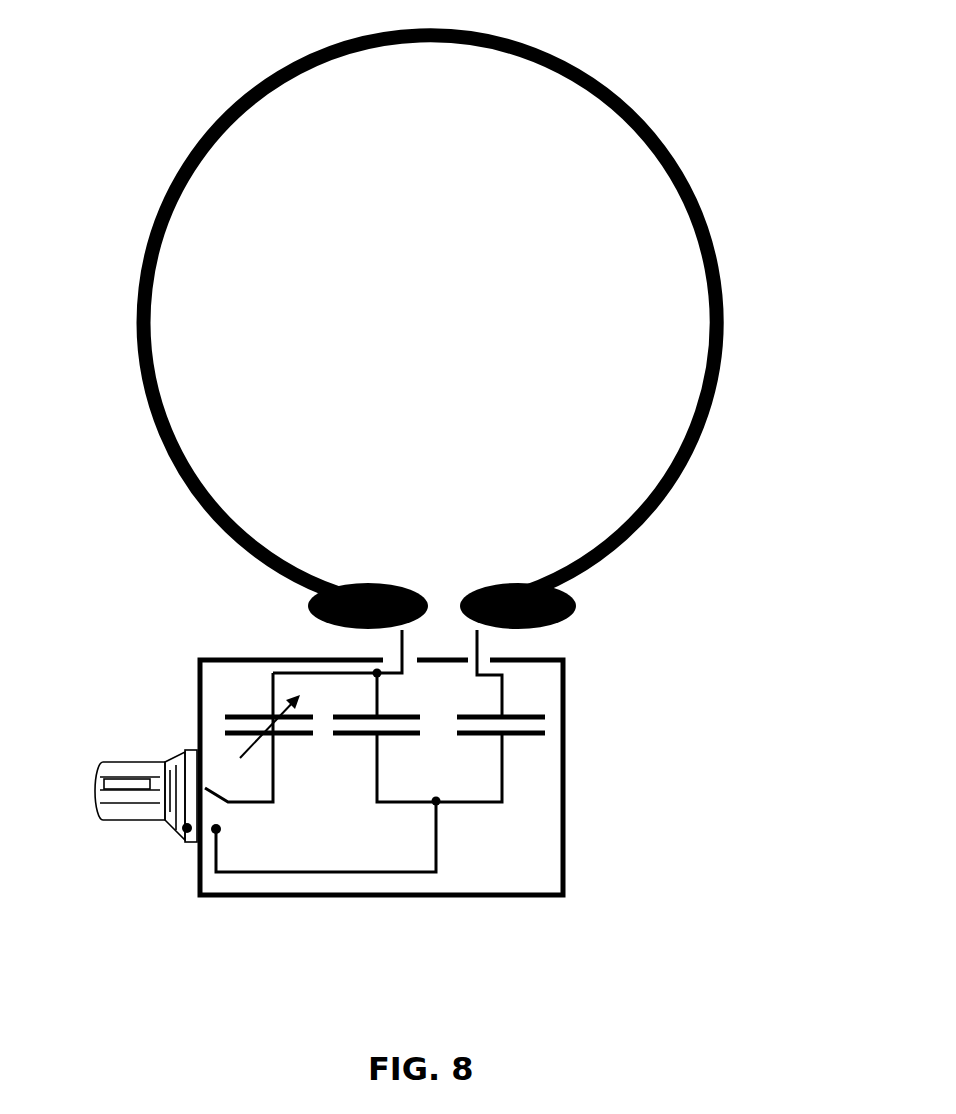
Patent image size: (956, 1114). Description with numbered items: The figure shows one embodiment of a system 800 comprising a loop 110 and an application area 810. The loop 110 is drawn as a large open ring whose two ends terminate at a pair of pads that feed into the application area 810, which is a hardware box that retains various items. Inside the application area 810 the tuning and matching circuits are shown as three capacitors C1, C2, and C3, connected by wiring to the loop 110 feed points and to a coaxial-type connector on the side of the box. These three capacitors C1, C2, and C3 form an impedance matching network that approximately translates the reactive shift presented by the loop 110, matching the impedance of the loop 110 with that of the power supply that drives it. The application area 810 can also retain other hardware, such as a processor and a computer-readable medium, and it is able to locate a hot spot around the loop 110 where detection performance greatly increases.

The system 800 is at (424, 462).
The loop 110 is at (670, 148).
The application area 810 is at (370, 762).
The capacitor C1 is at (269, 728).
The capacitor C2 is at (376, 739).
The capacitor C3 is at (501, 739).